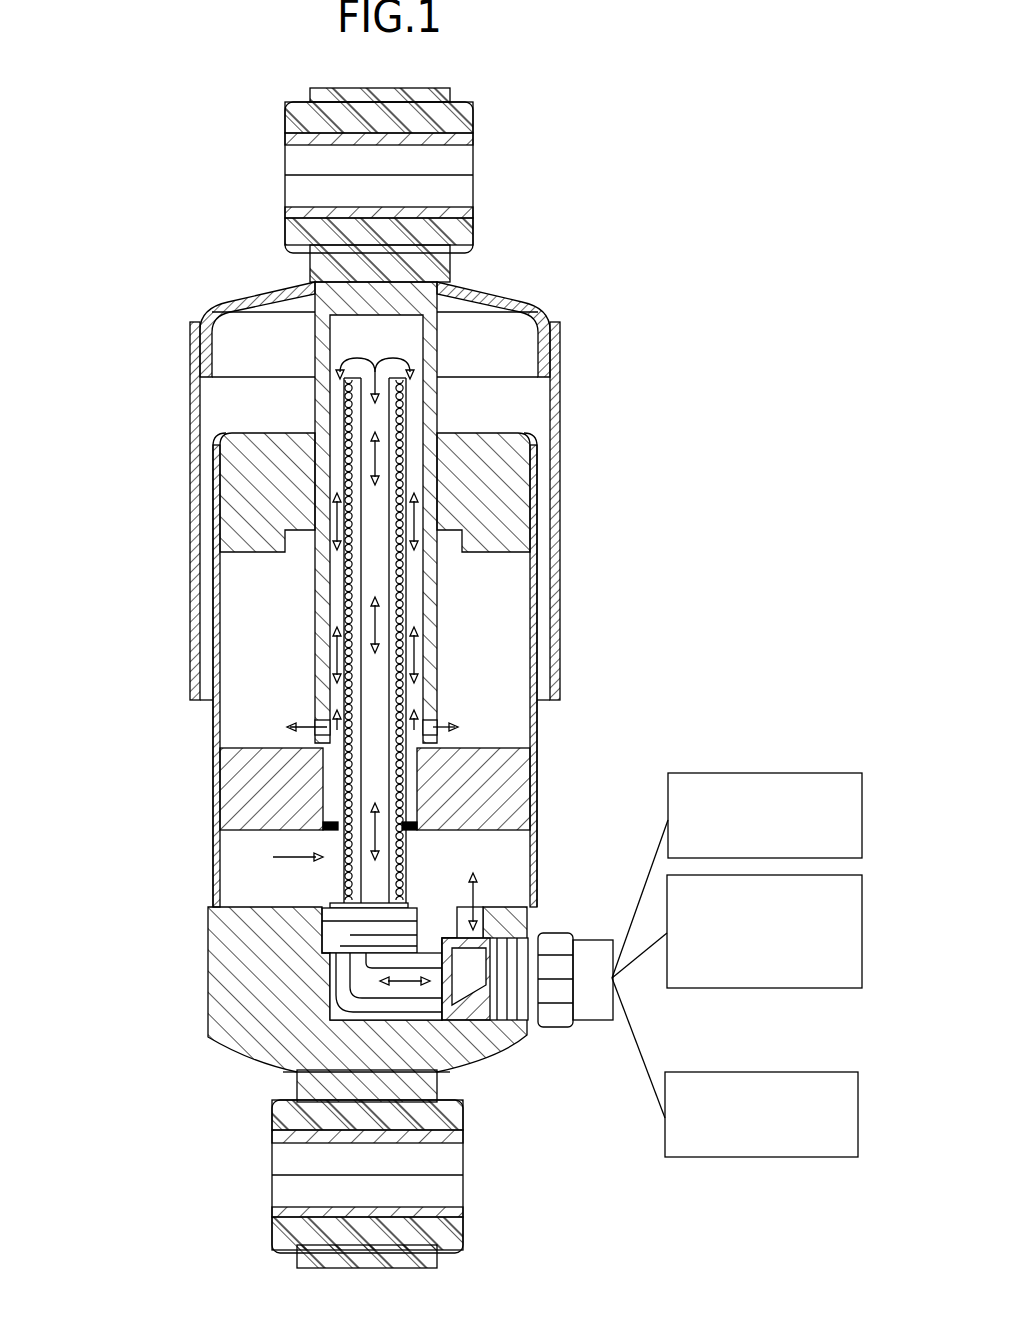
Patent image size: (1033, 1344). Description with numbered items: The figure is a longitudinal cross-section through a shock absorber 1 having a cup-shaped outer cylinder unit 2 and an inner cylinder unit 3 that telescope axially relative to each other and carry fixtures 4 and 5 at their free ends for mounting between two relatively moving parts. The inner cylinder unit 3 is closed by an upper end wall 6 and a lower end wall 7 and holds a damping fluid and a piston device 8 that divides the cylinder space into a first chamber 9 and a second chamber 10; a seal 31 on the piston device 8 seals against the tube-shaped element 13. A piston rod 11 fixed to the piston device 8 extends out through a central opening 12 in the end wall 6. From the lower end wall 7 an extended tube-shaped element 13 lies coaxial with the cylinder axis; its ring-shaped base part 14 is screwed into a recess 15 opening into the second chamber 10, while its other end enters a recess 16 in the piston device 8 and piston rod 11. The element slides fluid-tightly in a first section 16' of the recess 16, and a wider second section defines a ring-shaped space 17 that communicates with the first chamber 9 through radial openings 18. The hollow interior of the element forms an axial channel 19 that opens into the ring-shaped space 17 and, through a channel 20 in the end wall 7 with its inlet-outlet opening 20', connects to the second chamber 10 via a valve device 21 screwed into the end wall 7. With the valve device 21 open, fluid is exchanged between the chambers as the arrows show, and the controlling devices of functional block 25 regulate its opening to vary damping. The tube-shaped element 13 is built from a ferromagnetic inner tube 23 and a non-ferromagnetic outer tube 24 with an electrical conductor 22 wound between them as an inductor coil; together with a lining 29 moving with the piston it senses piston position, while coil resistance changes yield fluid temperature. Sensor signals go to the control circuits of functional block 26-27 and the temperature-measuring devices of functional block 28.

The shock absorber 1 is at (602, 188).
The outer cylinder unit 2 is at (557, 558).
The inner cylinder unit 3 is at (530, 790).
The fixture 4 is at (460, 133).
The fixture 5 is at (451, 1240).
The end wall 6 is at (515, 508).
The end wall 7 is at (255, 972).
The piston device 8 is at (233, 795).
The first chamber 9 is at (247, 605).
The second chamber 10 is at (510, 853).
The piston rod 11 is at (437, 632).
The central opening 12 is at (443, 432).
The tube-shaped element 13 is at (283, 854).
The ring-shaped base part 14 is at (405, 915).
The recess 15 is at (213, 920).
The recess 16 is at (334, 357).
The first section 16' is at (508, 761).
The ring-shaped space 17 is at (335, 578).
The openings 18 is at (318, 722).
The channel 19 is at (370, 870).
The channel 20 is at (280, 1003).
The opening 20' is at (243, 990).
The valve device 21 is at (527, 1030).
The electrical conductor 22 is at (402, 440).
The inner tube 23 is at (395, 862).
The outer tube 24 is at (402, 884).
The functional block 25 is at (756, 773).
The functional block 26-27 is at (763, 990).
The functional block 28 is at (752, 1157).
The lining 29 is at (437, 365).
The seal 31 is at (325, 823).